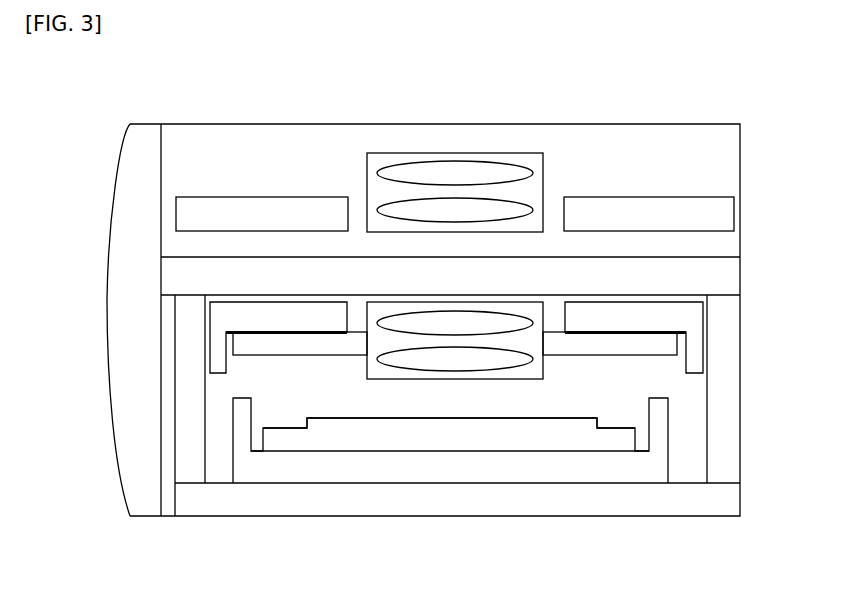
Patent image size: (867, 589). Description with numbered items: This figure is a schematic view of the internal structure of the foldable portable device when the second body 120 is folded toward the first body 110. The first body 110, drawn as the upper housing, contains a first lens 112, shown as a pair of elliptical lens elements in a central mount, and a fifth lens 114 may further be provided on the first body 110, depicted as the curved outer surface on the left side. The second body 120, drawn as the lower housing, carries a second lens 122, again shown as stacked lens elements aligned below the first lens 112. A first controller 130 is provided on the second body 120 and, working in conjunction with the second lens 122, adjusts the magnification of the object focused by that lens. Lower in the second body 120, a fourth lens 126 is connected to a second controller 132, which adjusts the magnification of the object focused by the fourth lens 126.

The first body 110 is at (740, 165).
The first lens 112 is at (524, 153).
The fifth lens 114 is at (126, 259).
The second body 120 is at (742, 402).
The second lens 122 is at (617, 330).
The fourth lens 126 is at (545, 420).
The first controller 130 is at (670, 345).
The second controller 132 is at (607, 443).